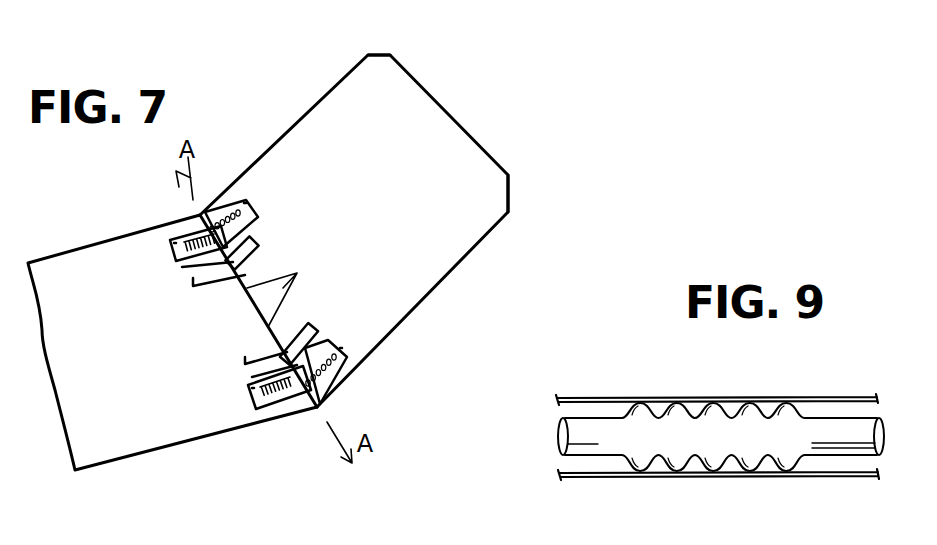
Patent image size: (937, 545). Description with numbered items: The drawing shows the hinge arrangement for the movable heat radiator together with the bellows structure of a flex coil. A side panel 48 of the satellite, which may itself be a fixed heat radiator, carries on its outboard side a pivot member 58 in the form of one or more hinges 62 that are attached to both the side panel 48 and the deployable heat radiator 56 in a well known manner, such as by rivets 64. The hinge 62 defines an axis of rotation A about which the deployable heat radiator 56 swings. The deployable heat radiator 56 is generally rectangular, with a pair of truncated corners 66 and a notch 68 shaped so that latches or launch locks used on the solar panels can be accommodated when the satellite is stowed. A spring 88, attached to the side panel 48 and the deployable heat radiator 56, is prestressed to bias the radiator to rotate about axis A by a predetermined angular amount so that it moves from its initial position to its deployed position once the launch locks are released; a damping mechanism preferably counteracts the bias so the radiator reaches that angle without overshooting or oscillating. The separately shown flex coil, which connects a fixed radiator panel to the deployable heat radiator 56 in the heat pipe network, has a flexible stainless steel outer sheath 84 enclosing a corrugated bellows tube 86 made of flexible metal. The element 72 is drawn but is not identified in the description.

In FIG. 7, the side panel 48 is at (74, 368).
In FIG. 7, the deployable heat radiator 56 is at (366, 202).
In FIG. 7, the pivot member 58 is at (231, 197).
In FIG. 7, the hinge 62 is at (257, 216).
In FIG. 7, the rivets 64 is at (254, 209).
In FIG. 7, the truncated corners 66 is at (368, 55).
In FIG. 7, the notch 68 is at (297, 273).
In FIG. 7, the strip 72 is at (262, 249).
In FIG. 7, the spring 88 is at (172, 247).
In FIG. 9, the outer sheath 84 is at (771, 398).
In FIG. 9, the bellows tube 86 is at (628, 410).